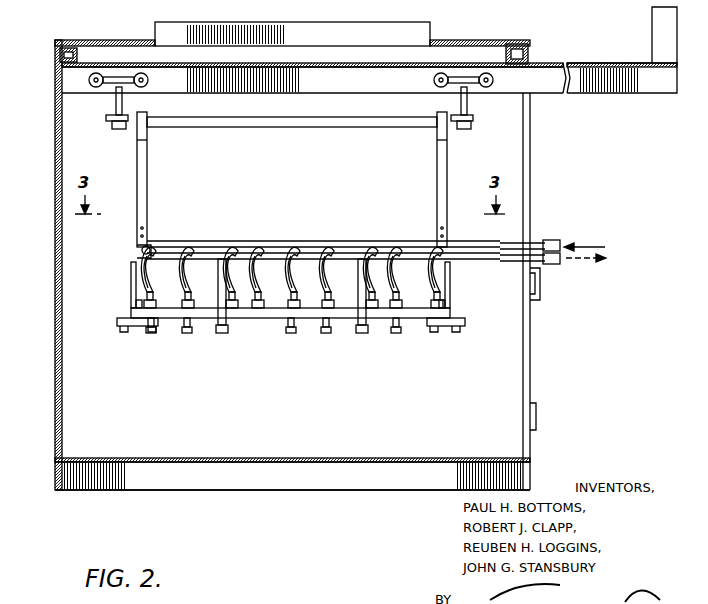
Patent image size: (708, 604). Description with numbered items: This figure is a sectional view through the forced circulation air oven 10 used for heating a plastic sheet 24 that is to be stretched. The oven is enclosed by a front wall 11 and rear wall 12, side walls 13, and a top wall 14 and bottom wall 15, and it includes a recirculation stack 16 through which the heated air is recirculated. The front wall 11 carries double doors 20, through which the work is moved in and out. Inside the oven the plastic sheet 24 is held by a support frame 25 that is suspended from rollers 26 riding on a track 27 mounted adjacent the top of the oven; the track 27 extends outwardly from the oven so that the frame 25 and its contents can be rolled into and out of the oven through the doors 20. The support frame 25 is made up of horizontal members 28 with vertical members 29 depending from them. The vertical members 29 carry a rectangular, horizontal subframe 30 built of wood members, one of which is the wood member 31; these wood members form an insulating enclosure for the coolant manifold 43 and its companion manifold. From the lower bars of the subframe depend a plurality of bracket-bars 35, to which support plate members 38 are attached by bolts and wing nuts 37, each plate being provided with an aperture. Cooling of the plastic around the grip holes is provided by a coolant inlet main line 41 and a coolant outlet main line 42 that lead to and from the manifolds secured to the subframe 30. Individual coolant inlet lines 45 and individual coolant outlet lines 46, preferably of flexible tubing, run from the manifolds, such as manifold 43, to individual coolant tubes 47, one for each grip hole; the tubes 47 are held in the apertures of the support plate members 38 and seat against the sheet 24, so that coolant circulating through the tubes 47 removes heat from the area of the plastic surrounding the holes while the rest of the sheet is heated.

The forced circulation air oven 10 is at (530, 325).
The front wall 11 is at (530, 475).
The rear wall 12 is at (55, 287).
The side walls 13 is at (124, 415).
The top wall 14 is at (86, 40).
The bottom wall 15 is at (320, 458).
The recirculation stack 16 is at (430, 35).
The double doors 20 is at (530, 153).
The plastic sheet 24 is at (420, 318).
The support frame 25 is at (266, 179).
The rollers 26 is at (149, 80).
The track 27 is at (602, 66).
The horizontal members 28 is at (292, 127).
The vertical members 29 is at (147, 172).
The subframe 30 is at (371, 278).
The wood member 31 is at (239, 250).
The bracket-bars 35 is at (131, 288).
The wing nuts 37 is at (115, 330).
The support plate members 38 is at (139, 326).
The coolant inlet main line 41 is at (496, 247).
The coolant outlet main line 42 is at (511, 262).
The coolant manifold 43 is at (205, 246).
The individual coolant inlet lines 45 is at (268, 292).
The individual coolant outlet lines 46 is at (262, 258).
The coolant tubes 47 is at (153, 336).